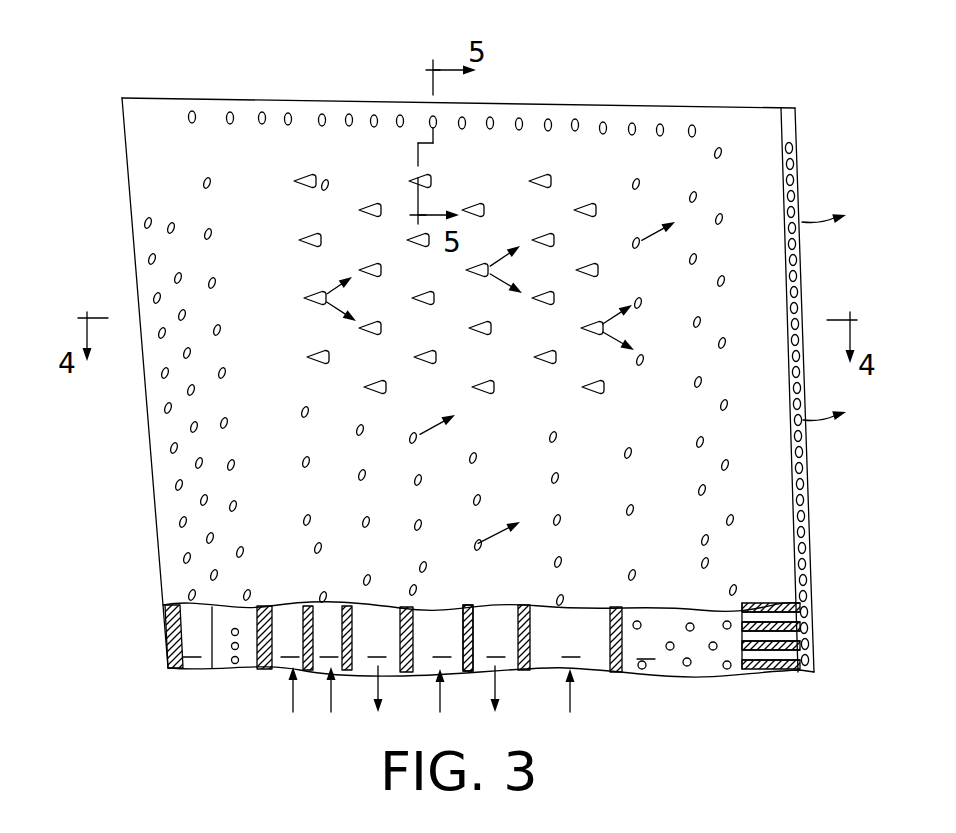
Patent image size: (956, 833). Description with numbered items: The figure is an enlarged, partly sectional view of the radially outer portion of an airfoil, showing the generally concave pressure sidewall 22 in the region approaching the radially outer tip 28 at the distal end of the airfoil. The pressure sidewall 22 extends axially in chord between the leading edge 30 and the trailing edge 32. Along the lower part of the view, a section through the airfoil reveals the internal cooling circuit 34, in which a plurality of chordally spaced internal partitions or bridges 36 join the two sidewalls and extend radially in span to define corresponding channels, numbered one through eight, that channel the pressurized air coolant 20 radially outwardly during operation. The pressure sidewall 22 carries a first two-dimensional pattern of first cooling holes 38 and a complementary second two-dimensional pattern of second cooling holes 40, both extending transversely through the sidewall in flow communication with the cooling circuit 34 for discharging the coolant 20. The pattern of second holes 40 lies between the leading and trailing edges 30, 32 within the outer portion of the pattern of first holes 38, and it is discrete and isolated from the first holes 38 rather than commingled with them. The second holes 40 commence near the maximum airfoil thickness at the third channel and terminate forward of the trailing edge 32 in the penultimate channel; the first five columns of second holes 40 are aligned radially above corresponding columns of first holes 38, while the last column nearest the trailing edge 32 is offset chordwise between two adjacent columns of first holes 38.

The pressurized air coolant 20 is at (667, 712).
The pressure sidewall 22 is at (391, 587).
The tip 28 is at (590, 100).
The leading edge 30 is at (133, 188).
The trailing edge 32 is at (800, 170).
The cooling circuit 34 is at (594, 680).
The internal partitions or bridges 36 is at (473, 620).
The first cooling holes 38 is at (224, 513).
The second cooling holes 40 is at (306, 262).